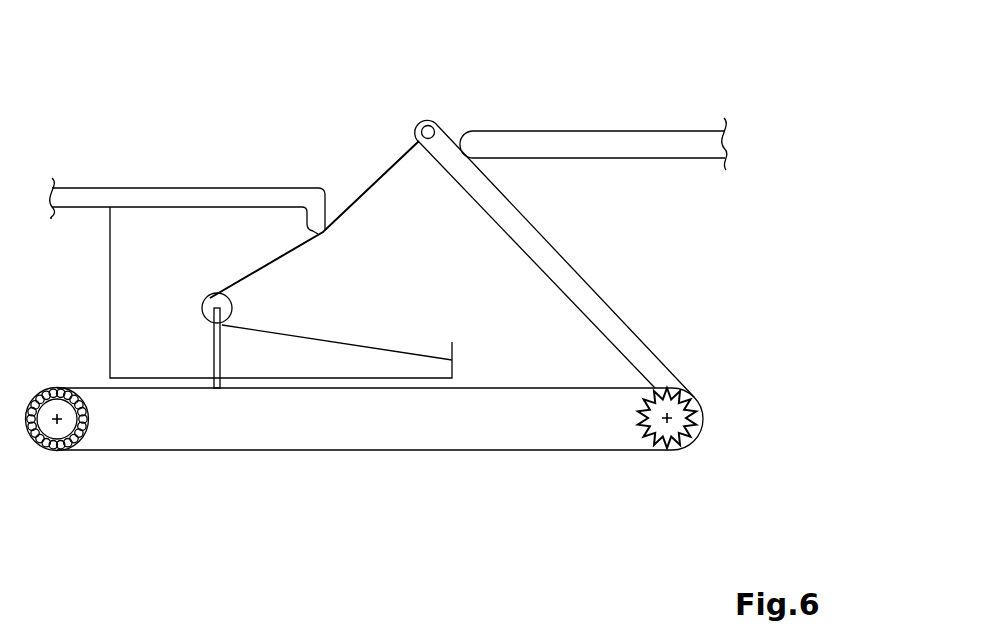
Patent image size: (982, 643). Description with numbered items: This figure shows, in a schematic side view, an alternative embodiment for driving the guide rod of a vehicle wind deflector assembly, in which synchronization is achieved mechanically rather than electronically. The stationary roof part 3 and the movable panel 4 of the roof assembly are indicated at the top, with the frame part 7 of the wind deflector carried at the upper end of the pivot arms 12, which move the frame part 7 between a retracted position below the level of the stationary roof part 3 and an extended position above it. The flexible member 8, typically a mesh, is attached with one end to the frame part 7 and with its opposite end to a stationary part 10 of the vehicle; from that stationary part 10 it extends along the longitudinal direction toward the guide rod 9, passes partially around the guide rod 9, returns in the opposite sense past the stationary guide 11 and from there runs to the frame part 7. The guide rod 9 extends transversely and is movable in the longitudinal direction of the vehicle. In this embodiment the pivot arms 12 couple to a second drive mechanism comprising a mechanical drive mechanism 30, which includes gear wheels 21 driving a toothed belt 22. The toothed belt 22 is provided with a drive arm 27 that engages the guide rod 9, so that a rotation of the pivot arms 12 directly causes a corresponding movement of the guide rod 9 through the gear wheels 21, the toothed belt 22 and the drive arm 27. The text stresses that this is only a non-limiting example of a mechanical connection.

The stationary roof part 3 is at (157, 191).
The movable panel 4 is at (588, 140).
The frame part 7 is at (430, 124).
The flexible member 8 is at (343, 210).
The guide rod 9 is at (229, 306).
The stationary part 10 is at (333, 378).
The stationary guide 11 is at (306, 217).
The pivot arms 12 is at (533, 240).
The gear wheels 21 is at (663, 441).
The toothed belt 22 is at (413, 450).
The drive arm 27 is at (213, 350).
The mechanical drive mechanism 30 is at (512, 506).